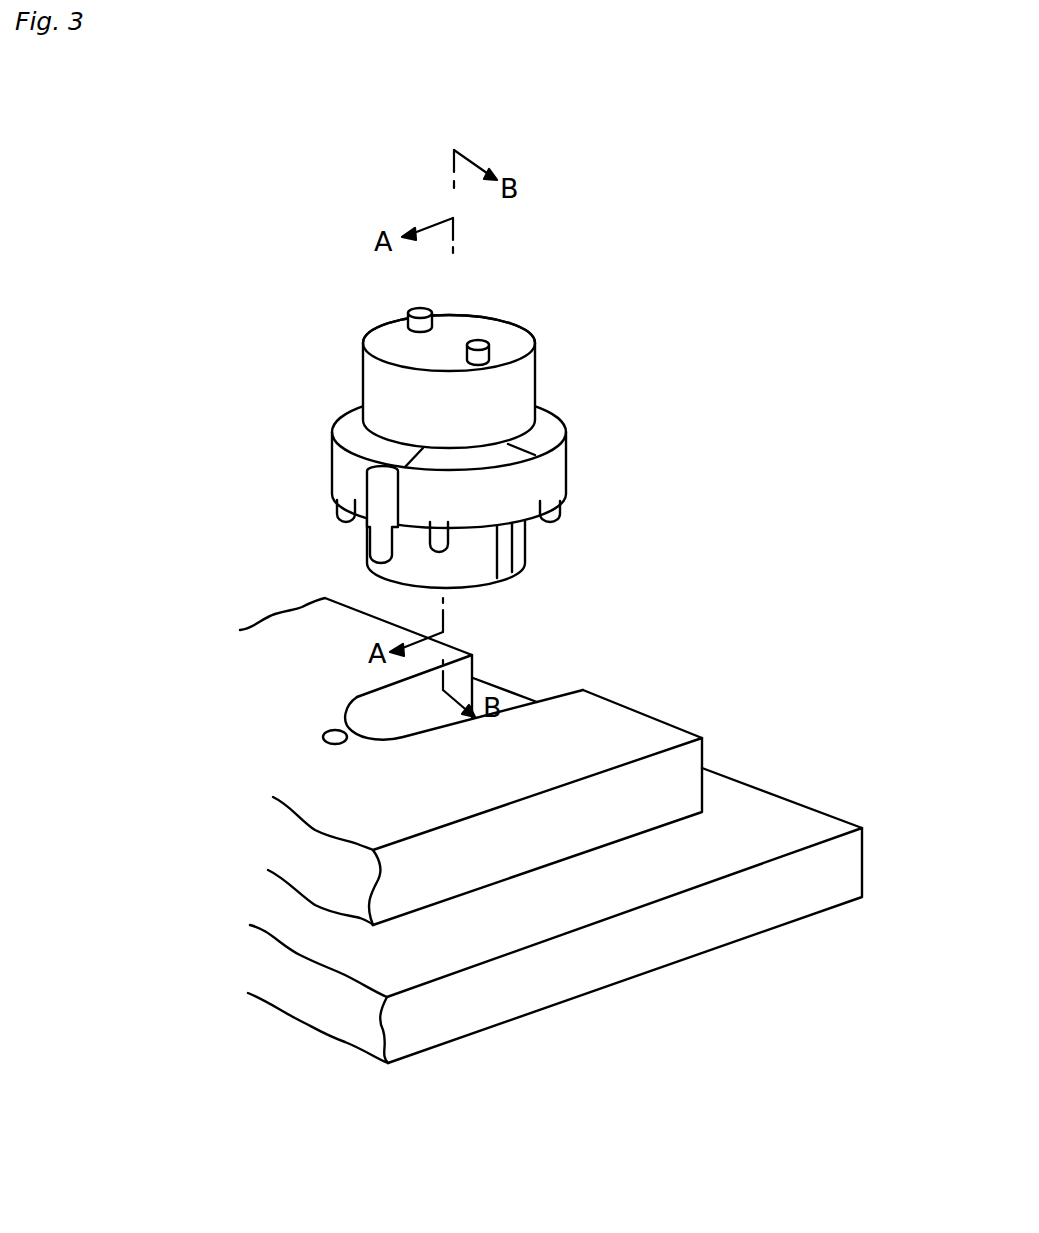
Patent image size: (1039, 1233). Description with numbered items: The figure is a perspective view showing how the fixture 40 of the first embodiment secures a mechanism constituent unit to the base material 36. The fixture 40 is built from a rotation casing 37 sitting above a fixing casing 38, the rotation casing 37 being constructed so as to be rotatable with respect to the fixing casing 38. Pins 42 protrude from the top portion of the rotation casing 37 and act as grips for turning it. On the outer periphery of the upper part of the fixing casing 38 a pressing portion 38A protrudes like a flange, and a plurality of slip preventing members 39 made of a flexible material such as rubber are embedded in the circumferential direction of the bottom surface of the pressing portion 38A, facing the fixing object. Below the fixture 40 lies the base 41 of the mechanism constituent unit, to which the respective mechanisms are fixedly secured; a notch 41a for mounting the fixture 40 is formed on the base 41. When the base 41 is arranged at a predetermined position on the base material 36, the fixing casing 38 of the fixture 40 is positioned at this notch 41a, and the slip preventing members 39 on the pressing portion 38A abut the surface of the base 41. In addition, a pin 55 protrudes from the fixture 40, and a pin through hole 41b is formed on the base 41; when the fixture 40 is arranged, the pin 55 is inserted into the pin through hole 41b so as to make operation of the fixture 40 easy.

The base material 36 is at (672, 950).
The rotation casing 37 is at (362, 377).
The fixing casing 38 is at (467, 570).
The pressing portion 38A is at (333, 463).
The slip preventing members 39 is at (560, 512).
The fixture 40 is at (276, 323).
The base 41 is at (471, 761).
The notch 41a is at (517, 712).
The pin through hole 41b is at (337, 733).
The pins 42 is at (416, 311).
The pin 55 is at (370, 545).